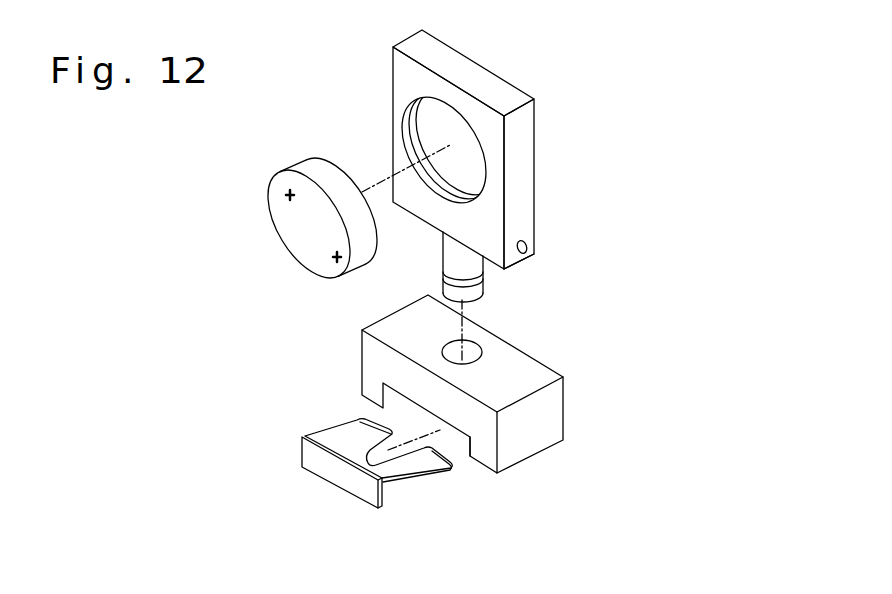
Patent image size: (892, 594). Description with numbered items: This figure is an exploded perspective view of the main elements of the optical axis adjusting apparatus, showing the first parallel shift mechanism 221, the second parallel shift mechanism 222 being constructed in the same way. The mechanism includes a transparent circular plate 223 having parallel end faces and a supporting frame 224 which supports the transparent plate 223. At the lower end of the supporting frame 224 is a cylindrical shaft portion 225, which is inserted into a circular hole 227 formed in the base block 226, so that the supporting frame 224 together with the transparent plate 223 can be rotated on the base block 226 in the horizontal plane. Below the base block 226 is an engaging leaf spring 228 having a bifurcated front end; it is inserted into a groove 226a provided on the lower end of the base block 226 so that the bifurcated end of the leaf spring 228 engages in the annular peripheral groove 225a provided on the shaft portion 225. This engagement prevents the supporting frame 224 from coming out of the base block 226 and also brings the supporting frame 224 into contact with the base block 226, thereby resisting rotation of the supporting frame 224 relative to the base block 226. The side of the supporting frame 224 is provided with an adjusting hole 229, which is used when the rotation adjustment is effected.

The first parallel shift mechanism 221 is at (535, 149).
The parallel shift mechanism 222 is at (548, 114).
The transparent circular plate 223 is at (287, 240).
The supporting frame 224 is at (523, 188).
The cylindrical shaft portion 225 is at (463, 270).
The annular peripheral groove 225a is at (443, 279).
The base block 226 is at (530, 373).
The groove 226a is at (470, 445).
The circular hole 227 is at (475, 348).
The engaging leaf spring 228 is at (402, 481).
The adjusting hole 229 is at (528, 245).